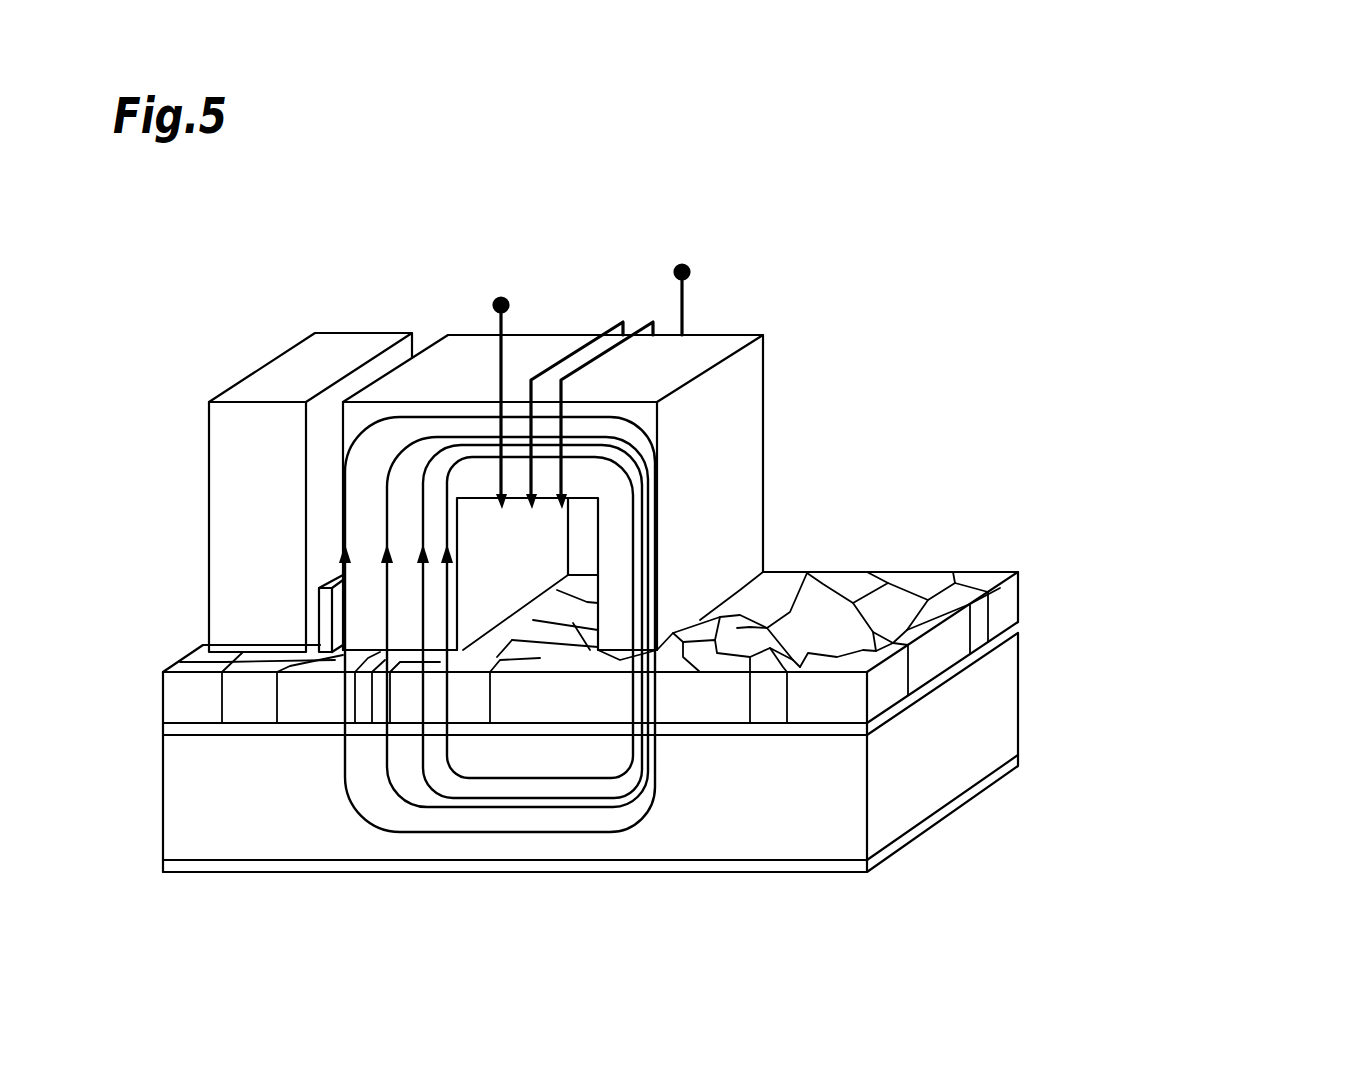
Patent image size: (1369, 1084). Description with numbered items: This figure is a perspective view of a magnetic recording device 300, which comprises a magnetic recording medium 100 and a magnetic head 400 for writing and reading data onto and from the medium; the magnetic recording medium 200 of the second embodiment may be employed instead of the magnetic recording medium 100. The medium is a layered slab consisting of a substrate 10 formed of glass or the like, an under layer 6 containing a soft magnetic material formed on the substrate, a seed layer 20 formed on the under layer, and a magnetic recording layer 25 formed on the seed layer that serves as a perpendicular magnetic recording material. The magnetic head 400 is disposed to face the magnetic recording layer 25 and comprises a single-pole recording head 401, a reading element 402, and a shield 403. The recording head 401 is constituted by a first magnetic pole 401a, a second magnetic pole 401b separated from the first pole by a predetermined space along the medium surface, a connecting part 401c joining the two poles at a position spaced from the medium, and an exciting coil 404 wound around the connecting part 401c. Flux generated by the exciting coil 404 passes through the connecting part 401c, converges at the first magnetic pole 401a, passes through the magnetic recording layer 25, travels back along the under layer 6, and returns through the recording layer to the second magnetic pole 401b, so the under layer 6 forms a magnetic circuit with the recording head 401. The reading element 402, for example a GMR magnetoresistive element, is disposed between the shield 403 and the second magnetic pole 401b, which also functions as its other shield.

The under layer 6 is at (1005, 717).
The substrate 10 is at (975, 795).
The seed layer 20 is at (1005, 634).
The magnetic recording layer 25 is at (1005, 607).
The magnetic recording medium 100 is at (1106, 662).
The magnetic recording medium 200 is at (1267, 646).
The magnetic recording device 300 is at (1277, 350).
The magnetic head 400 is at (1104, 407).
The recording head 401 is at (708, 348).
The first magnetic pole 401a is at (742, 512).
The second magnetic pole 401b is at (408, 585).
The connecting part 401c is at (485, 482).
The reading element 402 is at (324, 600).
The shield 403 is at (237, 418).
The exciting coil 404 is at (620, 322).